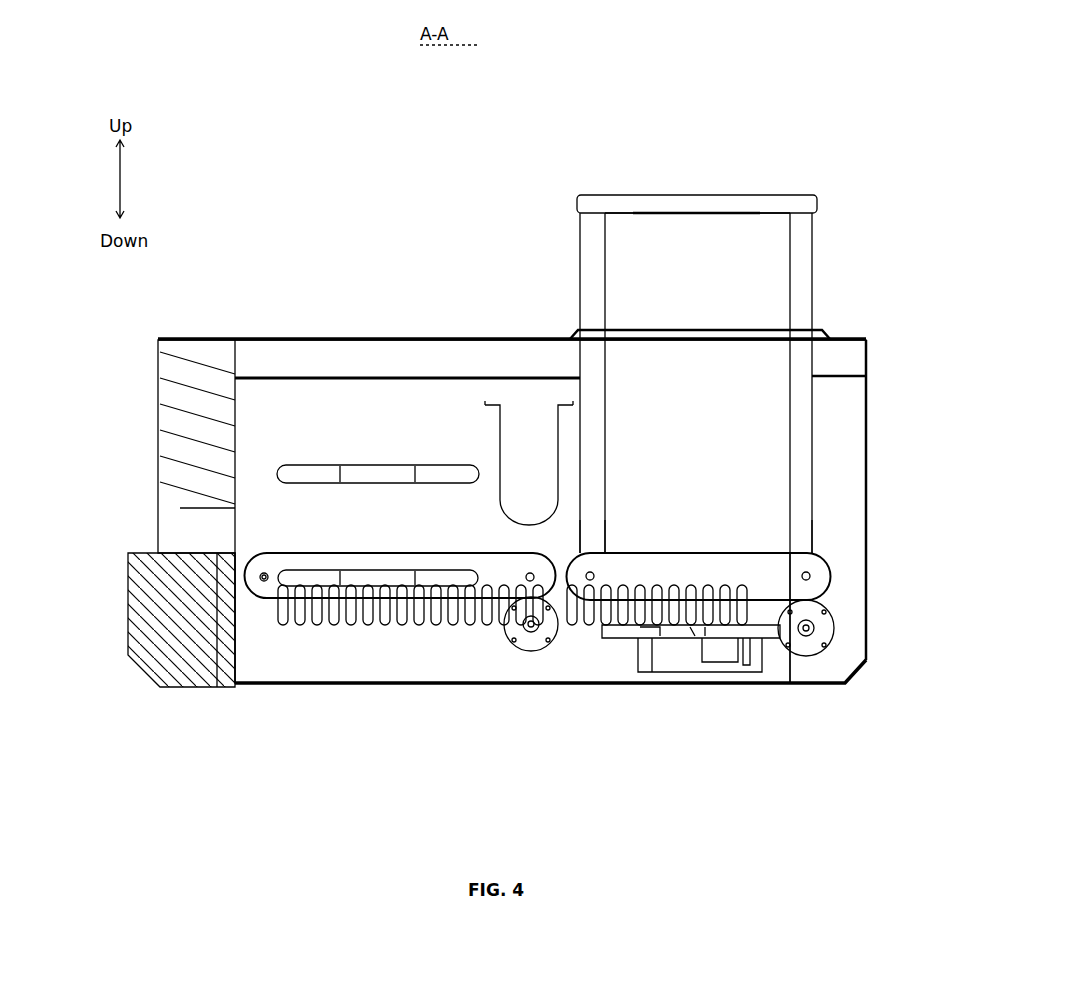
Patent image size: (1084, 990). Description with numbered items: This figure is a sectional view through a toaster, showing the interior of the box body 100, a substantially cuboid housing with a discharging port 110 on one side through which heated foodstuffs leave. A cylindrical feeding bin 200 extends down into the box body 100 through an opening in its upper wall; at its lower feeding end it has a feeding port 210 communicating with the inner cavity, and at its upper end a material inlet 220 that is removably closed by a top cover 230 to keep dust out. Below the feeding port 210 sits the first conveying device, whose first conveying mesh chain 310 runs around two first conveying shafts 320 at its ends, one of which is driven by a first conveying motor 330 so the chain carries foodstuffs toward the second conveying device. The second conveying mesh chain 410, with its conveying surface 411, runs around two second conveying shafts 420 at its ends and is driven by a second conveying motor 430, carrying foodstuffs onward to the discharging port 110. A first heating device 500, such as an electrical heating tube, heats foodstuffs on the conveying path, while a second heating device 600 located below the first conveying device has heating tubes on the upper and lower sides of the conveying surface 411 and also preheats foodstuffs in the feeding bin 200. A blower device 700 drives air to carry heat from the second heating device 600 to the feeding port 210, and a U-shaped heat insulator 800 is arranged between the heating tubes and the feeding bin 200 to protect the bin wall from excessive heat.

The box body 100 is at (163, 442).
The discharging port 110 is at (172, 527).
The feeding bin 200 is at (590, 273).
The feeding port 210 is at (715, 545).
The material inlet 220 is at (705, 222).
The top cover 230 is at (608, 195).
The first conveying mesh chain 310 is at (832, 580).
The first conveying shaft 320 is at (810, 573).
The first conveying motor 330 is at (830, 630).
The second conveying mesh chain 410 is at (268, 592).
The conveying surface 411 is at (320, 555).
The second conveying shaft 420 is at (264, 580).
The second conveying motor 430 is at (512, 655).
The first heating device 500 is at (380, 465).
The second heating device 600 is at (628, 634).
The blower device 700 is at (700, 662).
The heat insulator 800 is at (498, 402).